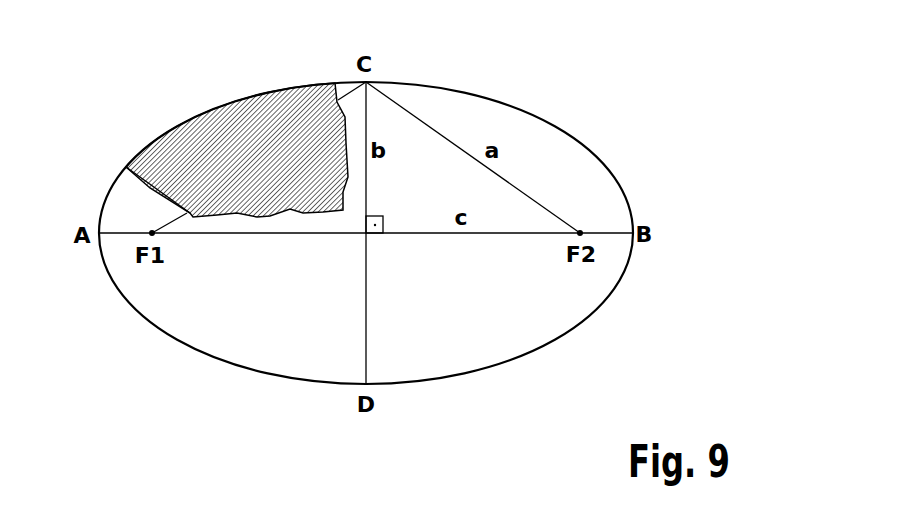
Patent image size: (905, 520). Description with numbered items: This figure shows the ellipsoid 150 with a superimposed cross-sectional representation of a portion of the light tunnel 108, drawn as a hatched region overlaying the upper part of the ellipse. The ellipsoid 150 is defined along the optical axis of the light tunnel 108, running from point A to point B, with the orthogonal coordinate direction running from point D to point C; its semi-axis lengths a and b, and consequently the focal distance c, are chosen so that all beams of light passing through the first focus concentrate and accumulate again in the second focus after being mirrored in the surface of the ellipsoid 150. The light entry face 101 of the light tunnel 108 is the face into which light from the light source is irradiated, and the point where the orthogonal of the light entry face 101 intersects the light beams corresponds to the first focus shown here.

The light entry face 101 is at (151, 187).
The light tunnel 108 is at (223, 160).
The ellipsoid 150 is at (583, 143).